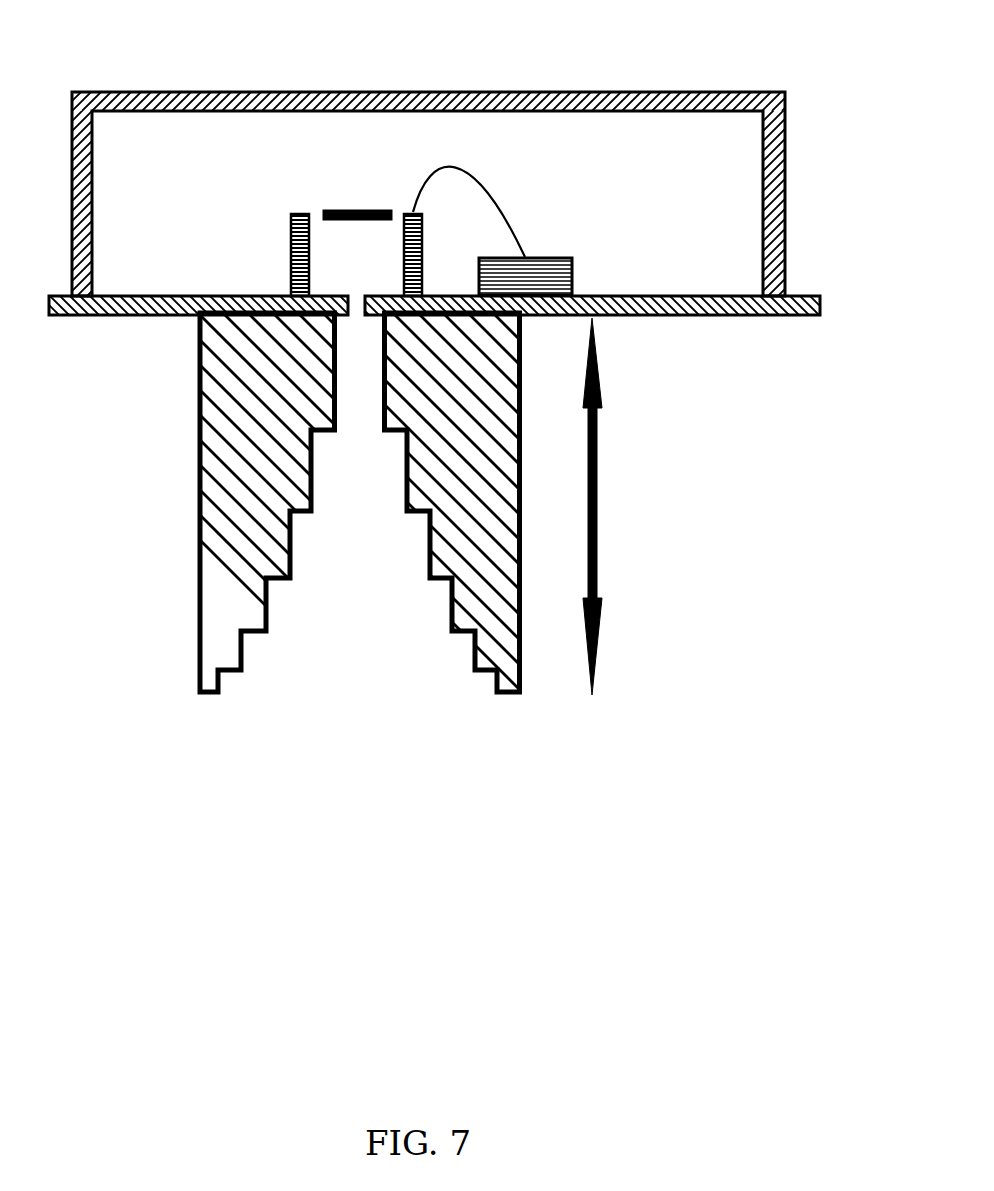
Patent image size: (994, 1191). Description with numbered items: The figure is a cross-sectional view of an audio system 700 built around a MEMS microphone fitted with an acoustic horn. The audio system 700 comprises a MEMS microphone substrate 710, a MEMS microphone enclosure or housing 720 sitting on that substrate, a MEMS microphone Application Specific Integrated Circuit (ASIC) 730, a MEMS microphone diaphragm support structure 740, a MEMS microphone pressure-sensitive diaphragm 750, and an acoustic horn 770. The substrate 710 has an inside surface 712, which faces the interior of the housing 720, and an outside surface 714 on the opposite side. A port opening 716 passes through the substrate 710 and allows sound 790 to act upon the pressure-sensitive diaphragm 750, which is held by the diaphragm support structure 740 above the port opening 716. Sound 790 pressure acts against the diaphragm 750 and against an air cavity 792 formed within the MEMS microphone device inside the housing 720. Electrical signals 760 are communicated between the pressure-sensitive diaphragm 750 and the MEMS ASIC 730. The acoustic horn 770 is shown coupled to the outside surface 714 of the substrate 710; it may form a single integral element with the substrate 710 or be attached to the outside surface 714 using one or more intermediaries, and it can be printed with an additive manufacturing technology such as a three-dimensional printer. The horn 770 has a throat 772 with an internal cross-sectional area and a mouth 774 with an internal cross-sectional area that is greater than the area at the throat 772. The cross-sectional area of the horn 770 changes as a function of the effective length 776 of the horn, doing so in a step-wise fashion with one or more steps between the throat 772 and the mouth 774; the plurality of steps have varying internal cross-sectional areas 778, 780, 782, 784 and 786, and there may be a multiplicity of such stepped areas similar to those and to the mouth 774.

The audio system 700 is at (237, 44).
The MEMS microphone substrate 710 is at (142, 316).
The inside surface 712 is at (667, 296).
The outside surface 714 is at (167, 320).
The port opening 716 is at (358, 304).
The MEMS microphone enclosure or housing 720 is at (680, 92).
The MEMS microphone Application Specific Integrated Circuit (ASIC) 730 is at (573, 282).
The MEMS microphone diaphragm support structure 740 is at (290, 262).
The MEMS microphone pressure-sensitive diaphragm 750 is at (331, 183).
The electrical signals 760 is at (512, 218).
The acoustic horn 770 is at (198, 560).
The throat 772 is at (380, 316).
The mouth 774 is at (225, 698).
The effective length 776 is at (598, 523).
The internal cross-sectional area 778 is at (380, 418).
The internal cross-sectional area 780 is at (404, 477).
The internal cross-sectional area 782 is at (291, 548).
The internal cross-sectional area 784 is at (272, 608).
The internal cross-sectional area 786 is at (250, 658).
The sound 790 is at (399, 786).
The air cavity 792 is at (174, 163).